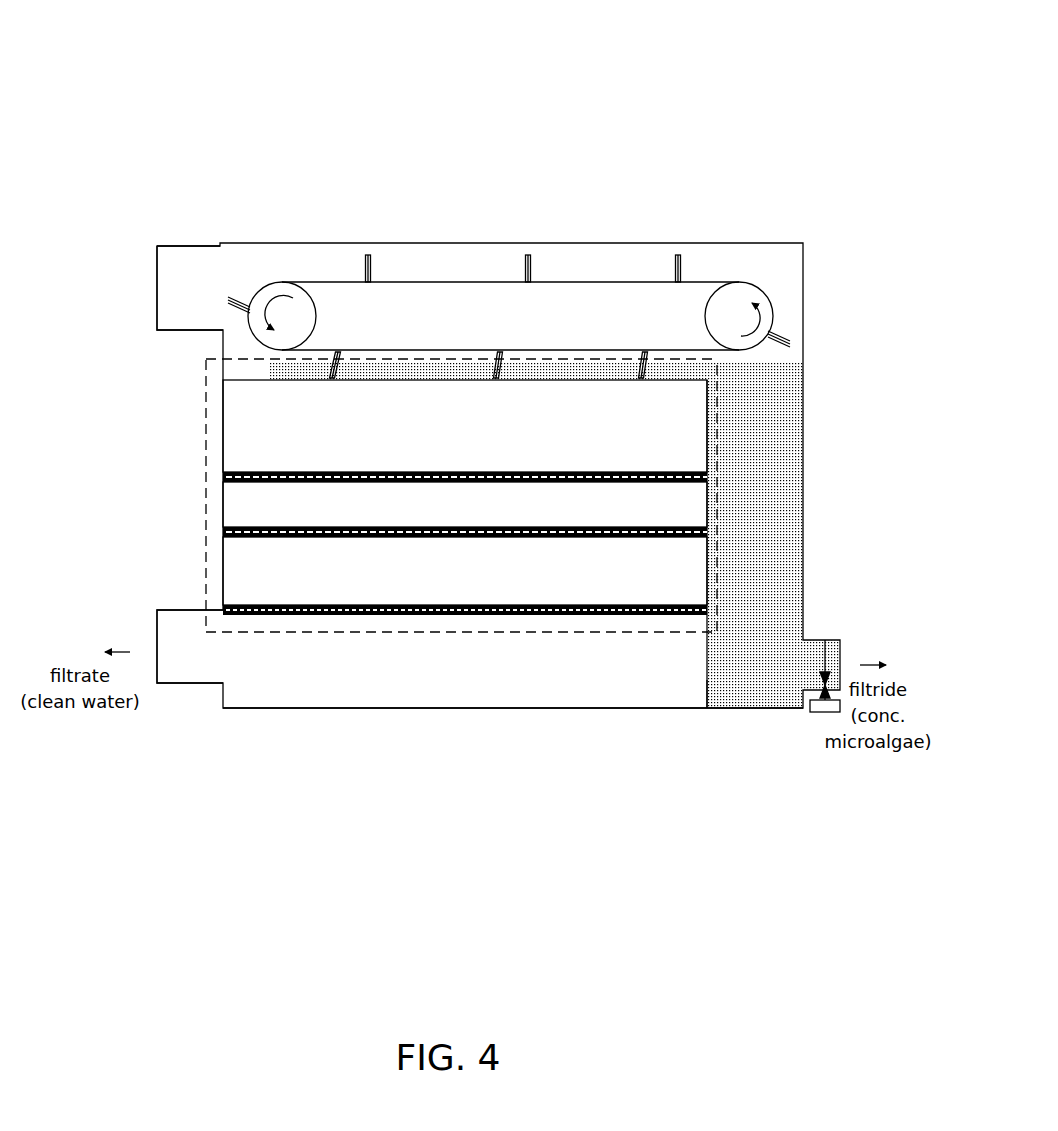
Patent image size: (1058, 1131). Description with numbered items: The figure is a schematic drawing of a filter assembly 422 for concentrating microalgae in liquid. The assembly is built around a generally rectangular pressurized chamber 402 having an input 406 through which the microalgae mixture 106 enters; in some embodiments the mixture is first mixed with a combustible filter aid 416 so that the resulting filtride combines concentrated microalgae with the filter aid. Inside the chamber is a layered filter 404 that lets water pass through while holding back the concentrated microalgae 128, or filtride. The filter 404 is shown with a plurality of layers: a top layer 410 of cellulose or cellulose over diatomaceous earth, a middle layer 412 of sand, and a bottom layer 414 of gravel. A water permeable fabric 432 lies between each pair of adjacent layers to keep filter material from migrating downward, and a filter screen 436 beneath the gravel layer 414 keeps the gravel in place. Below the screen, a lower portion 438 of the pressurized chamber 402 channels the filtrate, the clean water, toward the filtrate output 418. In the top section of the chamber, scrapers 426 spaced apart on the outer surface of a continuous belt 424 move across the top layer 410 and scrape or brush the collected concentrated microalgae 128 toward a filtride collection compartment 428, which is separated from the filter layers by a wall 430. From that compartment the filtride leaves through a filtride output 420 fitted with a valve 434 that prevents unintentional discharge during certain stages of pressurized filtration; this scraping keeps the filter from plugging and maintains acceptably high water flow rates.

The filter assembly 422 is at (206, 60).
The pressurized chamber 402 is at (266, 243).
The input 406 is at (157, 252).
The microalgae mixture 106 is at (150, 289).
The combustible filter aid 416 is at (81, 366).
The layered filter 404 is at (206, 390).
The concentrated microalgae 128 is at (577, 375).
The filtride collection compartment 428 is at (773, 553).
The top layer 410 is at (228, 421).
The water permeable fabric 432 is at (223, 477).
The sand layer 412 is at (235, 494).
The gravel layer 414 is at (235, 553).
The filter screen 436 is at (223, 608).
The continuous belt 424 is at (395, 282).
The scrapers 426 is at (368, 258).
The filtride output 420 is at (840, 641).
The valve 434 is at (822, 713).
The wall 430 is at (705, 678).
The lower portion 438 is at (420, 693).
The filtrate output 418 is at (190, 672).